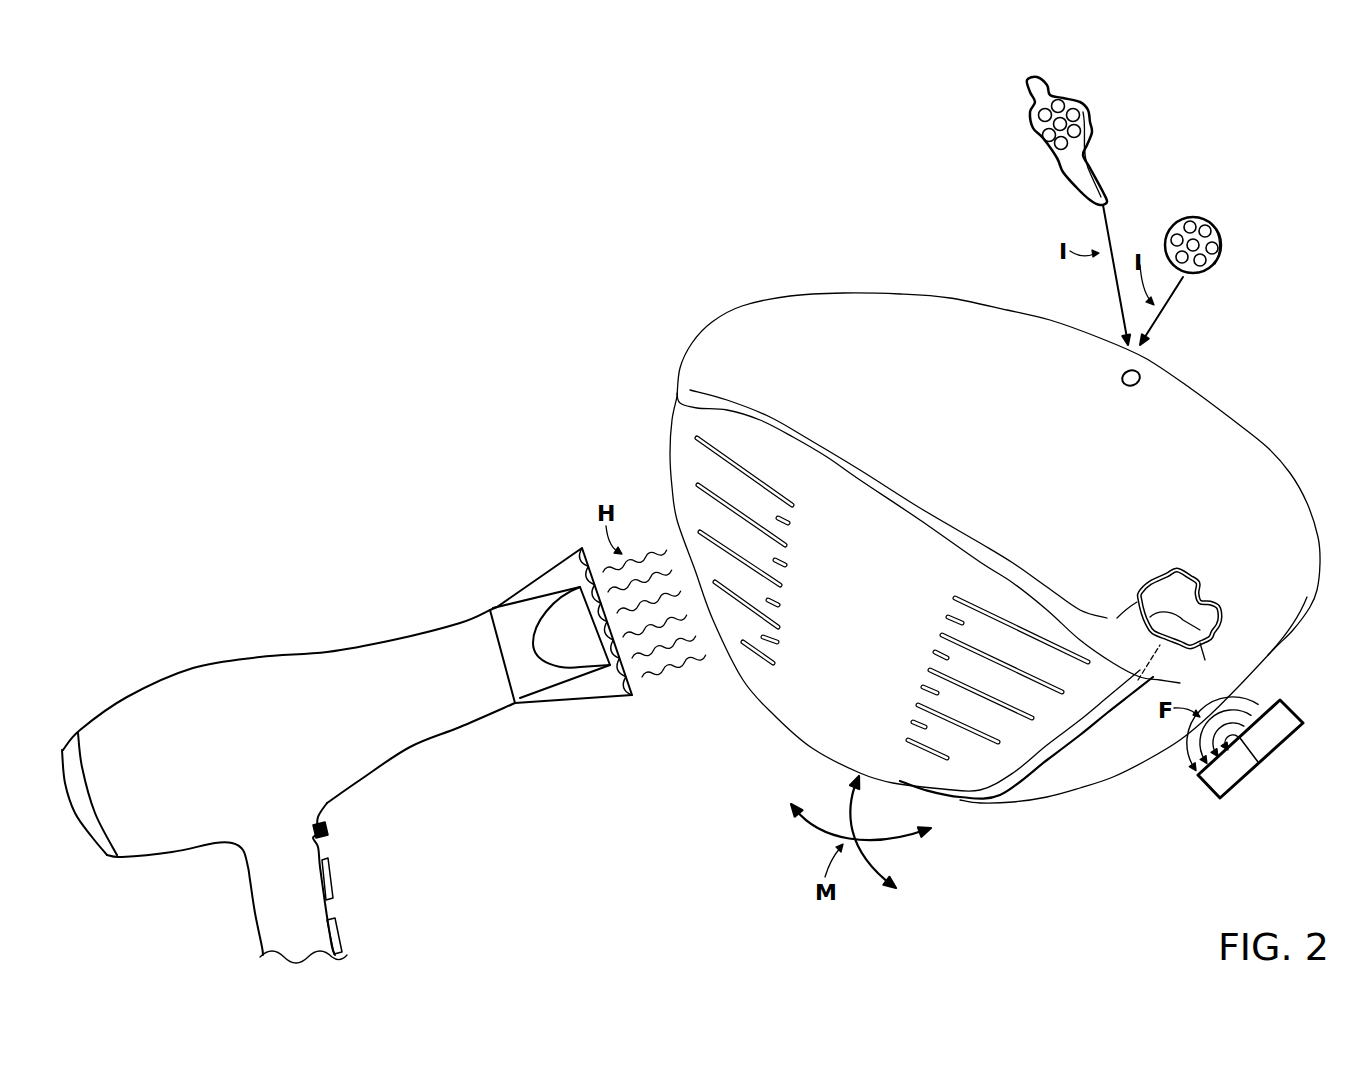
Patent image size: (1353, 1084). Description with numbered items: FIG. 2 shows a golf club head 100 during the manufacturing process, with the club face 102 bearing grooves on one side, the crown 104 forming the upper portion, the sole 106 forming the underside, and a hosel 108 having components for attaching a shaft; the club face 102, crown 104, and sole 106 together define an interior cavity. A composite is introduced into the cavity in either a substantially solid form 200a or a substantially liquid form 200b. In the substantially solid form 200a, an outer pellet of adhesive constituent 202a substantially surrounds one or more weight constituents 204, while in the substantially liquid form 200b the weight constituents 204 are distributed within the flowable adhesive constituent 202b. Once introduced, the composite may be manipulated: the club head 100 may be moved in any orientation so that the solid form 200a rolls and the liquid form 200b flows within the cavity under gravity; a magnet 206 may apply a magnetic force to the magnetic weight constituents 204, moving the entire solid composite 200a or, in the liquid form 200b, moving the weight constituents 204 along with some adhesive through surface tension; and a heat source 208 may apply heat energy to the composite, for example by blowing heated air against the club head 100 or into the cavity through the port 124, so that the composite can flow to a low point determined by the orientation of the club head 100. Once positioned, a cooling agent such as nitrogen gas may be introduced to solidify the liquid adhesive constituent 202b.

The golf club head 100 is at (744, 151).
The club face 102 is at (783, 684).
The crown 104 is at (890, 308).
The sole 106 is at (1093, 780).
The hosel 108 is at (1210, 660).
The port 124 is at (1137, 370).
The substantially solid form of composite 200a is at (1220, 227).
The substantially liquid form of composite 200b is at (1065, 66).
The adhesive constituent 202a is at (1217, 258).
The flowable adhesive constituent 202b is at (1095, 127).
The weight constituents 204 is at (1040, 115).
The magnet 206 is at (1263, 767).
The heat source 208 is at (553, 703).